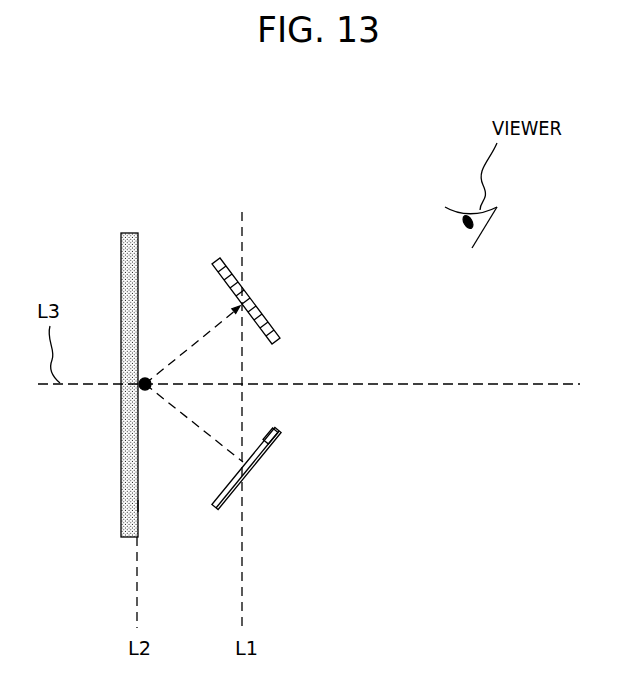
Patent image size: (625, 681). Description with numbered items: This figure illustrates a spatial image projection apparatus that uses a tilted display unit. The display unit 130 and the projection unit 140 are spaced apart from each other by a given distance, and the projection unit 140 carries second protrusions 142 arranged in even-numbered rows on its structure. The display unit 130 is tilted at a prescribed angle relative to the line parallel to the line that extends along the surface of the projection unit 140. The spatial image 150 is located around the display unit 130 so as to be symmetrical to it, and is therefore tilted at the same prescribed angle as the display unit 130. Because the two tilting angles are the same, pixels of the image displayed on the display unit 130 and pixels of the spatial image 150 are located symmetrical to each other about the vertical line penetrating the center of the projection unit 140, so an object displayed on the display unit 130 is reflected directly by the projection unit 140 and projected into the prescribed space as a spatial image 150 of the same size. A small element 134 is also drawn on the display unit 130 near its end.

The projection unit 140 is at (127, 233).
The second protrusions 142 is at (138, 505).
The spatial image 150 is at (248, 296).
The display unit 130 is at (250, 465).
The mirror holder 134 is at (266, 441).